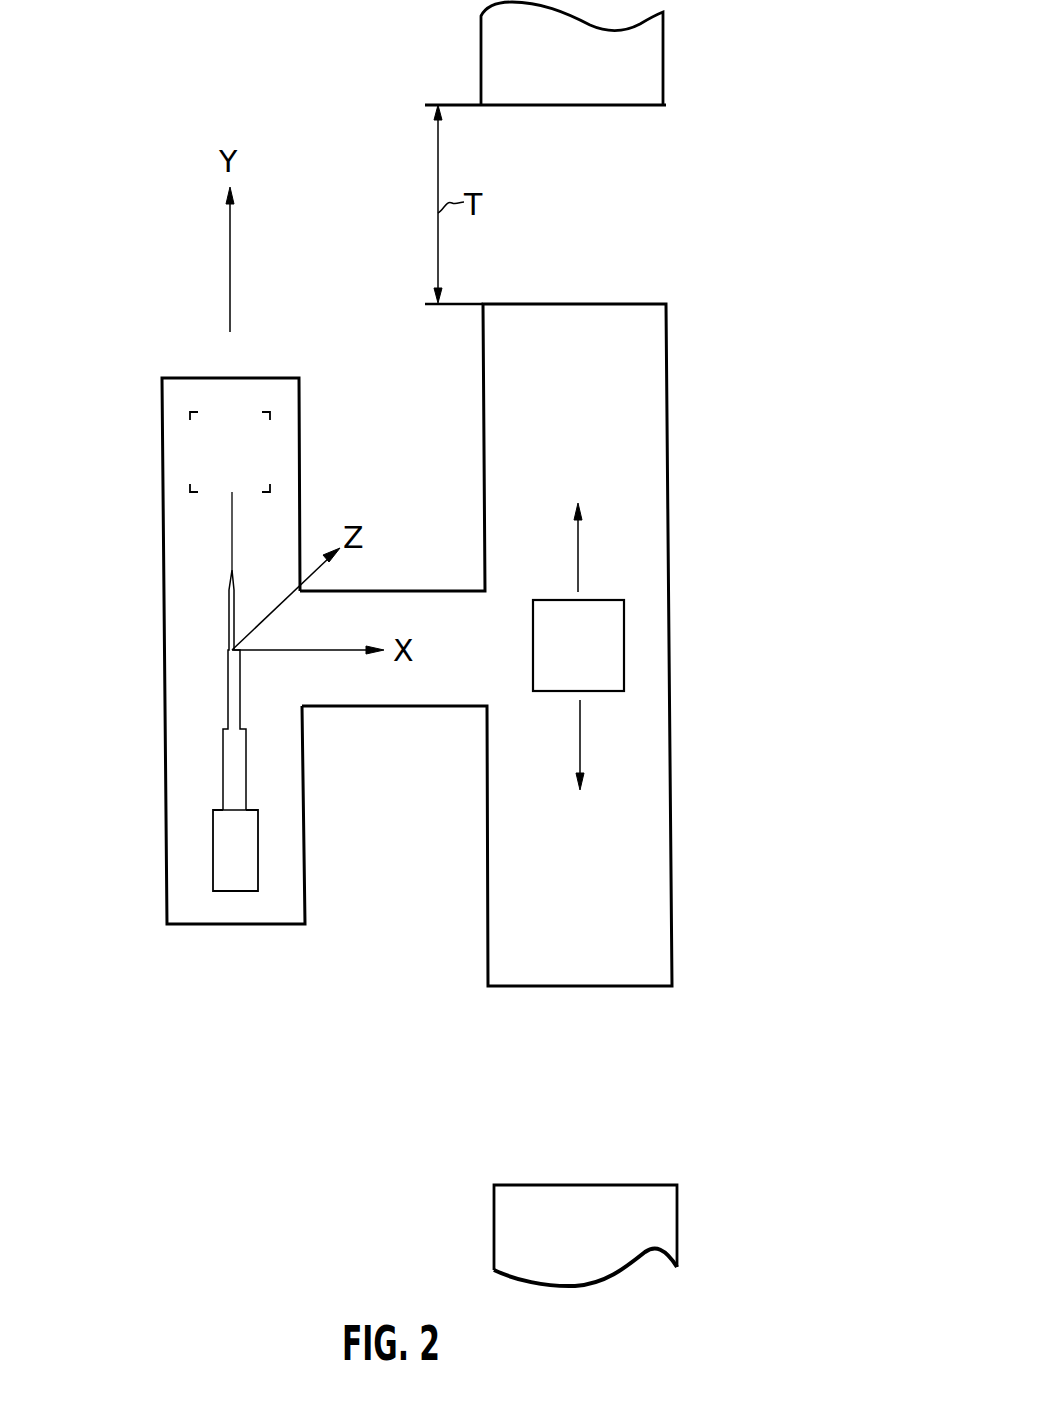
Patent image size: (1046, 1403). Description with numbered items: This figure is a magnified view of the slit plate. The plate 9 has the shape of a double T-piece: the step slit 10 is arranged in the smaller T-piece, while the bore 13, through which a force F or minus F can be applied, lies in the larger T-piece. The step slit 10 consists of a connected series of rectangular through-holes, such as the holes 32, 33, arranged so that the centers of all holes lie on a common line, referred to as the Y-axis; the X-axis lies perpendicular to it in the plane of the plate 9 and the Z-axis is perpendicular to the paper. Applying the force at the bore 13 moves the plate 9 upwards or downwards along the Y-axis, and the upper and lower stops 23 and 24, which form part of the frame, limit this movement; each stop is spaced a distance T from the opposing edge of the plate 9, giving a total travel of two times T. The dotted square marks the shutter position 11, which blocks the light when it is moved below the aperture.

The plate 9 is at (507, 865).
The step slit 10 is at (183, 637).
The shutter position 11 is at (208, 447).
The bore 13 is at (610, 651).
The upper stop 23 is at (650, 66).
The lower stop 24 is at (657, 1222).
The hole 32 is at (222, 848).
The hole 33 is at (231, 753).